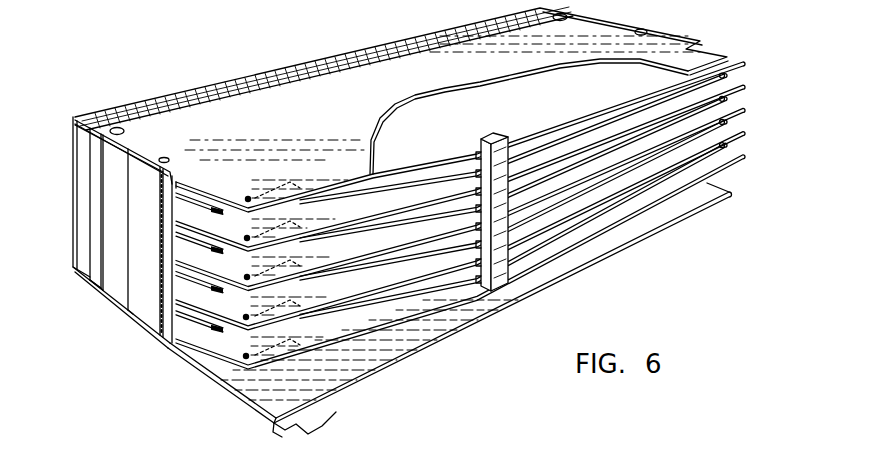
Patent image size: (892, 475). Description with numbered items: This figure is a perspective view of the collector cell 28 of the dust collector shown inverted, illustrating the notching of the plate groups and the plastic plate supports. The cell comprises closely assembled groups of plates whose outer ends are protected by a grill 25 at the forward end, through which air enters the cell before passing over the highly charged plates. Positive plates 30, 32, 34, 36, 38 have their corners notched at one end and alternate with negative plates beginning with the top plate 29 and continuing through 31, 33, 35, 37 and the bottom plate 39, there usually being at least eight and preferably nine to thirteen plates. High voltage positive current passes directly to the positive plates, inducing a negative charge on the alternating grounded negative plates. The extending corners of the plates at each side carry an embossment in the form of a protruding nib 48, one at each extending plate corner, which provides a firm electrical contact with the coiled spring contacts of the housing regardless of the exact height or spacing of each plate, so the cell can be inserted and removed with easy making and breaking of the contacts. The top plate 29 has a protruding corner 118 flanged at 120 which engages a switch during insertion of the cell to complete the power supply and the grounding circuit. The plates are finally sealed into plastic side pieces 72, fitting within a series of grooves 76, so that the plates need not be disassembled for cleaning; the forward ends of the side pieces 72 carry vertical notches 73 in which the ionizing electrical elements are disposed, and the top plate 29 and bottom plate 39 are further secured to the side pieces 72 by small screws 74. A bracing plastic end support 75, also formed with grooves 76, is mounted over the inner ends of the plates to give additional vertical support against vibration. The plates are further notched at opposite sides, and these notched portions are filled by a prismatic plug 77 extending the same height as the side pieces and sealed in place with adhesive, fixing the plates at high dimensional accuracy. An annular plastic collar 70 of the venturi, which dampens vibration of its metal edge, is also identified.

The grill 25 is at (211, 90).
The collector cell 28 is at (476, 304).
The top plate 29 is at (717, 188).
The positive plate 30 is at (742, 159).
The negative plate 31 is at (728, 146).
The positive plate 32 is at (742, 135).
The negative plate 33 is at (728, 123).
The positive plate 34 is at (742, 112).
The negative plate 35 is at (728, 100).
The positive plate 36 is at (742, 89).
The negative plate 37 is at (728, 77).
The positive plate 38 is at (742, 65).
The bottom plate 39 is at (353, 172).
The nib 48 is at (248, 198).
The annular plastic collar 70 is at (482, 147).
The plastic side pieces 72 is at (112, 282).
The vertical notches 73 is at (90, 152).
The small screws 74 is at (171, 158).
The bracing plastic end support 75 is at (500, 136).
The grooves 76 is at (182, 186).
The prismatic plug 77 is at (130, 297).
The protruding corner 118 is at (334, 413).
The flange 120 is at (300, 428).